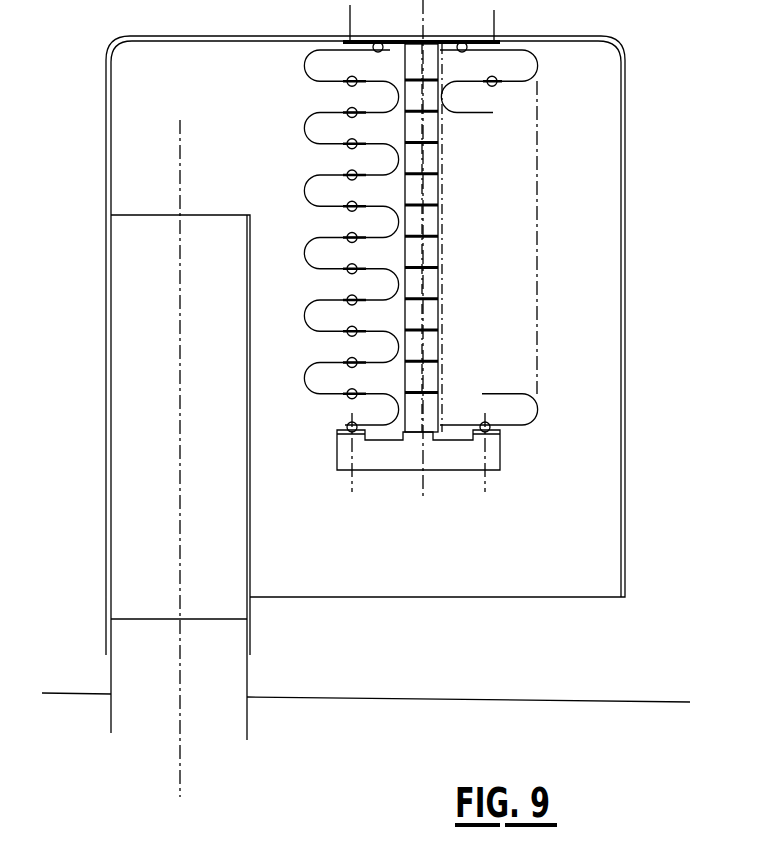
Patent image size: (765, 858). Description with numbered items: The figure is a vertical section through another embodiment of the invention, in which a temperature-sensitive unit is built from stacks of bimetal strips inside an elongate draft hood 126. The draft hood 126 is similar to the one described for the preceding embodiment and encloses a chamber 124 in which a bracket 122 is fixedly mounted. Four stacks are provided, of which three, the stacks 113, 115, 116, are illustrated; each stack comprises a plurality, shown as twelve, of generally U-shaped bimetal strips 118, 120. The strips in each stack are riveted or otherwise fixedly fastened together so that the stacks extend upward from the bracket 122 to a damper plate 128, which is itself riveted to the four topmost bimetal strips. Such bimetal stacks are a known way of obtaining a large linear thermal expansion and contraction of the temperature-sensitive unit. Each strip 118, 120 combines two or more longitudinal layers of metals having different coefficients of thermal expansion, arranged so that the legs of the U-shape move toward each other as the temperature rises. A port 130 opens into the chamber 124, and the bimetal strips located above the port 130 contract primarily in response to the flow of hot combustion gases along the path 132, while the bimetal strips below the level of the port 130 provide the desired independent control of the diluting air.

The stack 113 is at (290, 66).
The stack 115 is at (442, 168).
The stack 116 is at (549, 72).
The bimetal strip 118 is at (305, 127).
The bimetal strip 120 is at (375, 152).
The bracket 122 is at (338, 452).
The chamber 124 is at (378, 567).
The draft hood 126 is at (627, 258).
The damper plate 128 is at (467, 37).
The port 130 is at (213, 215).
The path 132 is at (218, 144).